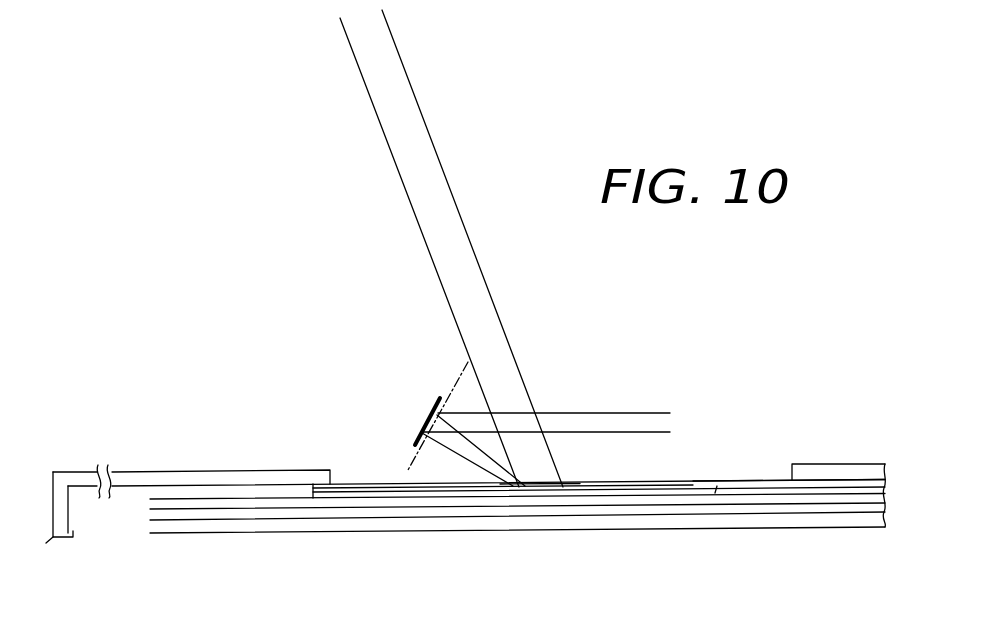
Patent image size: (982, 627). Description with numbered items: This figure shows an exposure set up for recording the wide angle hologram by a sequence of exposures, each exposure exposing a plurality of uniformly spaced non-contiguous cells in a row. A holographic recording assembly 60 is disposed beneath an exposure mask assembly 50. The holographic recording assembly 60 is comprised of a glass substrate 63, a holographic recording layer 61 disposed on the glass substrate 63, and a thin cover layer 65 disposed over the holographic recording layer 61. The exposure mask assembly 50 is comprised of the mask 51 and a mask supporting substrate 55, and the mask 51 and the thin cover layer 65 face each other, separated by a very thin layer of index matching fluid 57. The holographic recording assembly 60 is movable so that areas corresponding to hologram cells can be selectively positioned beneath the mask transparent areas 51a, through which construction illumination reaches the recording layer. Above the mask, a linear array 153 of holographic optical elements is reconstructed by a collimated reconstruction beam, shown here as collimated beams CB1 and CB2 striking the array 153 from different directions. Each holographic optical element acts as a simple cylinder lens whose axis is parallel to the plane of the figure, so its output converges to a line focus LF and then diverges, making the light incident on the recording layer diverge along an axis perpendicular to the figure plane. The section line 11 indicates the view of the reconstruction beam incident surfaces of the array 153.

The exposure mask assembly 50 is at (810, 483).
The mask 51 is at (757, 484).
The mask transparent areas 51a is at (540, 492).
The mask supporting substrate 55 is at (693, 484).
The index matching fluid 57 is at (717, 492).
The holographic recording assembly 60 is at (153, 495).
The holographic recording layer 61 is at (275, 513).
The glass substrate 63 is at (250, 523).
The thin cover layer 65 is at (227, 503).
The section line 11 is at (468, 362).
The linear array of holographic optical elements 153 is at (436, 408).
The first collimated beam CB1 is at (668, 413).
The second collimated beam CB2 is at (474, 243).
The light focus LF is at (517, 467).